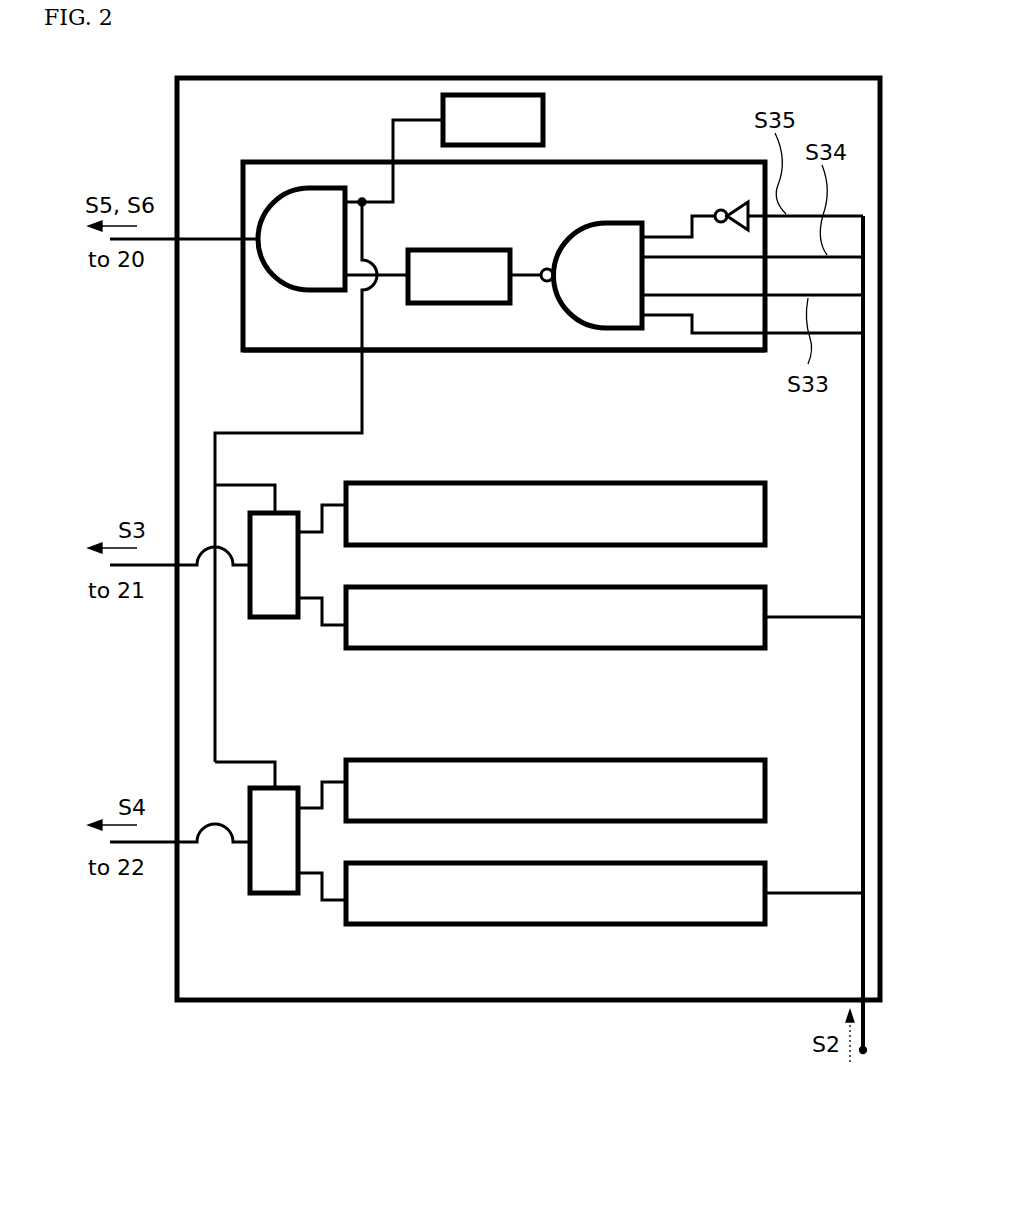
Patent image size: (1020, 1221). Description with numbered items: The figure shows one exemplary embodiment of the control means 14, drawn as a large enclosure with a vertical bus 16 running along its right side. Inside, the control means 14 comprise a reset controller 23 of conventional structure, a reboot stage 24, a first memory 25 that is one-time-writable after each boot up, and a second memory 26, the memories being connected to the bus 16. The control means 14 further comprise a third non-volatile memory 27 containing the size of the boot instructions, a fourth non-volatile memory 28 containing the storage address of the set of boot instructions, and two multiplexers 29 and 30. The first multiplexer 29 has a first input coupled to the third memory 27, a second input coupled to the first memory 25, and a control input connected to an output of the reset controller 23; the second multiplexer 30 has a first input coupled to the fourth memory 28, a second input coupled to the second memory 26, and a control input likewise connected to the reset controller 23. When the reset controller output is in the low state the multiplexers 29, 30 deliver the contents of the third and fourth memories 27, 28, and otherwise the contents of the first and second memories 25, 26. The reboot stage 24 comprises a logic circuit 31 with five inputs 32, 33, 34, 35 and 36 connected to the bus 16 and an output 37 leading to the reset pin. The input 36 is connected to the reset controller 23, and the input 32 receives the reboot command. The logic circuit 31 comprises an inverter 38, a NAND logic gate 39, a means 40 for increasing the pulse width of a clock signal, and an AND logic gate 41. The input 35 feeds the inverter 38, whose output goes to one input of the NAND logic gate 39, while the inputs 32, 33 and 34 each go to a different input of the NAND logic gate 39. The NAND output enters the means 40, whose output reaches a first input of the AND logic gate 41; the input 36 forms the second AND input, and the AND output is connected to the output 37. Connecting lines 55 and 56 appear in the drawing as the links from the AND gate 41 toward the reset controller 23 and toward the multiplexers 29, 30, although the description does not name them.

The control means 14 is at (884, 536).
The bus 16 is at (866, 463).
The reset controller 23 is at (493, 120).
The reboot stage 24 is at (652, 352).
The first memory 25 is at (604, 617).
The second memory 26 is at (604, 893).
The third non-volatile memory 27 is at (555, 514).
The fourth non-volatile memory 28 is at (555, 790).
The first multiplexer 29 is at (274, 565).
The second multiplexer 30 is at (274, 840).
The logic circuit 31 is at (572, 208).
The input 32 is at (868, 333).
The input 33 is at (868, 295).
The input 34 is at (868, 257).
The input 35 is at (868, 216).
The input 36 is at (385, 158).
The output 37 is at (243, 234).
The inverter 38 is at (716, 212).
The NAND logic gate 39 is at (576, 275).
The means for increasing the pulse width of a clock signal 40 is at (459, 276).
The AND logic gate 41 is at (301, 239).
The connecting line 55 is at (416, 120).
The connecting line 56 is at (393, 289).